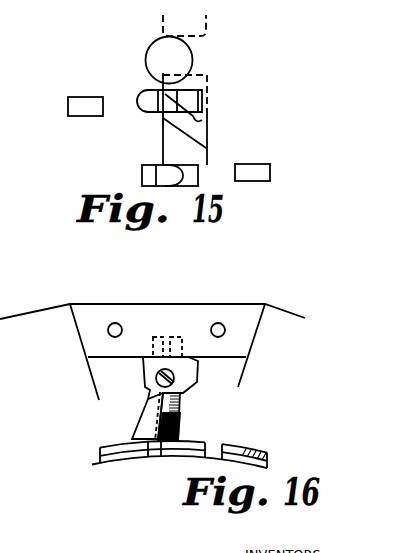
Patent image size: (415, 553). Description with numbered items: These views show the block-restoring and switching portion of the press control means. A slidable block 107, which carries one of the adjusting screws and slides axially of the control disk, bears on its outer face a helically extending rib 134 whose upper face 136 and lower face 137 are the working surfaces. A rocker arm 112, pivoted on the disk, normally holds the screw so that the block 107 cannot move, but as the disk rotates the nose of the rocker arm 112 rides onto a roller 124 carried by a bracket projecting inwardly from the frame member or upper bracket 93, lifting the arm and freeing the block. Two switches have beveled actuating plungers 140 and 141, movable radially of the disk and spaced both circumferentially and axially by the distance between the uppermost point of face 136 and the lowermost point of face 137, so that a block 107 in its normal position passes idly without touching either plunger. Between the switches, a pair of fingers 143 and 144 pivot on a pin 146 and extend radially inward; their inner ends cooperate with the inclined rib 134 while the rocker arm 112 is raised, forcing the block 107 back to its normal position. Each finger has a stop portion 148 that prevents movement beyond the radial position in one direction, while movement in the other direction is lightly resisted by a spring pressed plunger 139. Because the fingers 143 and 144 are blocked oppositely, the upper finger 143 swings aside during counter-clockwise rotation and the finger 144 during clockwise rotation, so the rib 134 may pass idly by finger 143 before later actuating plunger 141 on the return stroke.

In FIG. 16, the upper bracket 93 is at (124, 312).
In FIG. 15, the slidable block 107 is at (208, 79).
In FIG. 16, the slidable block 107 is at (112, 458).
In FIG. 15, the rocker arm 112 is at (207, 27).
In FIG. 15, the roller 124 is at (192, 53).
In FIG. 15, the helical rib 134 is at (197, 132).
In FIG. 15, the upper face of helical rib 136 is at (204, 121).
In FIG. 16, the upper face of helical rib 136 is at (118, 442).
In FIG. 15, the lower face of helical rib 137 is at (174, 125).
In FIG. 16, the spring pressed plunger 139 is at (176, 337).
In FIG. 15, the actuating plunger 140 is at (256, 172).
In FIG. 15, the plunger 141 is at (84, 101).
In FIG. 15, the finger 143 is at (198, 101).
In FIG. 16, the finger 143 is at (141, 412).
In FIG. 15, the finger 144 is at (142, 173).
In FIG. 16, the finger 144 is at (182, 408).
In FIG. 16, the pin 146 is at (182, 392).
In FIG. 16, the stop portion 148 is at (196, 362).